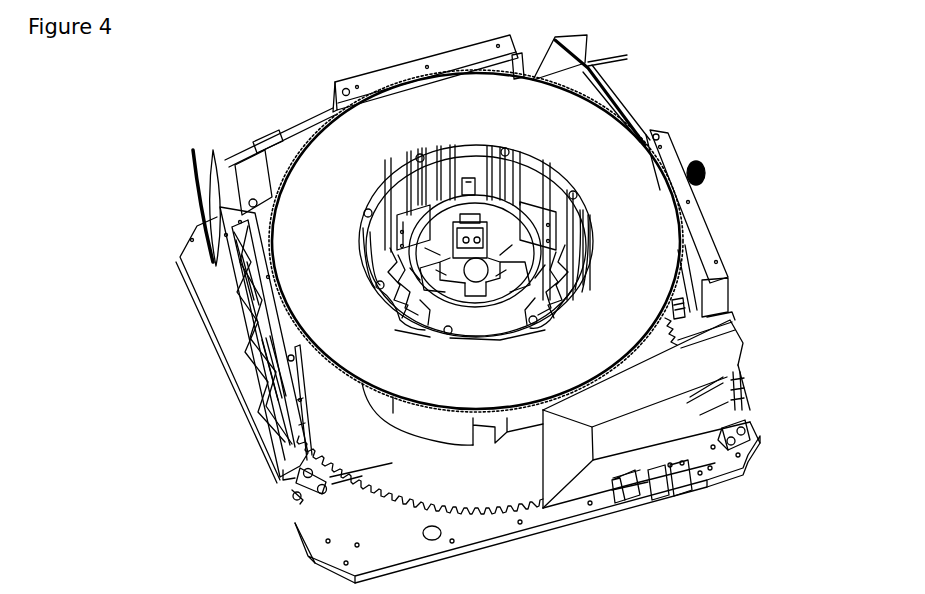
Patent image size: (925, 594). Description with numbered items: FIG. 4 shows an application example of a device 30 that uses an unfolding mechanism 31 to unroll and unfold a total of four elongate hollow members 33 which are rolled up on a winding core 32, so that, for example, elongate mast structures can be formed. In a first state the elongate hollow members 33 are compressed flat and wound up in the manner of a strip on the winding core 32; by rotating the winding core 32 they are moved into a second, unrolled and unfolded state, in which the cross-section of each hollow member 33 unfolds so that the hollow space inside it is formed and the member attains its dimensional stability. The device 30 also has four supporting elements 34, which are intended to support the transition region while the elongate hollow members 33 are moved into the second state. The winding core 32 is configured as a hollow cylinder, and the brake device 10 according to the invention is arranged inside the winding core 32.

The device 30 is at (157, 192).
The unfolding mechanism 31 is at (672, 148).
The winding core 32 is at (527, 175).
The elongate hollow members 33 is at (280, 357).
The supporting elements 34 is at (680, 367).
The brake device 10 is at (378, 285).